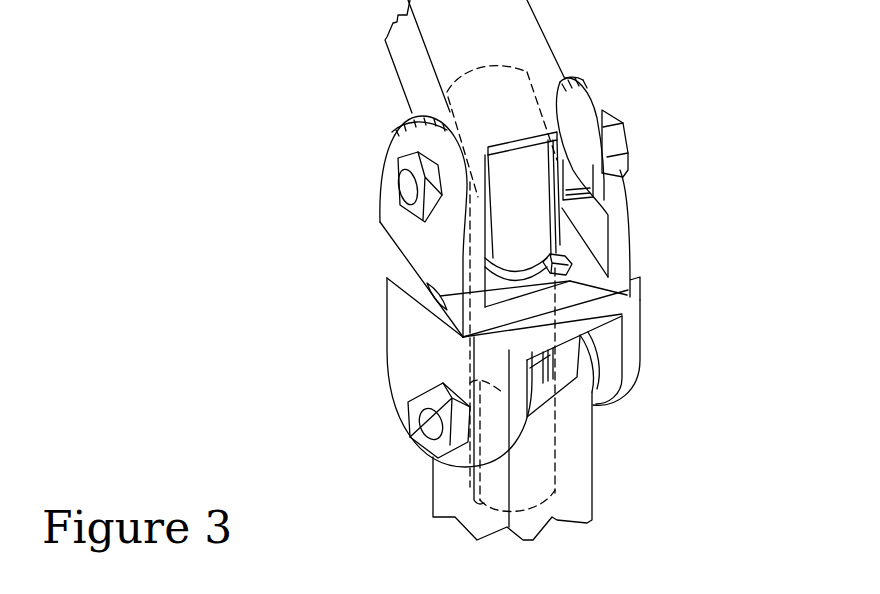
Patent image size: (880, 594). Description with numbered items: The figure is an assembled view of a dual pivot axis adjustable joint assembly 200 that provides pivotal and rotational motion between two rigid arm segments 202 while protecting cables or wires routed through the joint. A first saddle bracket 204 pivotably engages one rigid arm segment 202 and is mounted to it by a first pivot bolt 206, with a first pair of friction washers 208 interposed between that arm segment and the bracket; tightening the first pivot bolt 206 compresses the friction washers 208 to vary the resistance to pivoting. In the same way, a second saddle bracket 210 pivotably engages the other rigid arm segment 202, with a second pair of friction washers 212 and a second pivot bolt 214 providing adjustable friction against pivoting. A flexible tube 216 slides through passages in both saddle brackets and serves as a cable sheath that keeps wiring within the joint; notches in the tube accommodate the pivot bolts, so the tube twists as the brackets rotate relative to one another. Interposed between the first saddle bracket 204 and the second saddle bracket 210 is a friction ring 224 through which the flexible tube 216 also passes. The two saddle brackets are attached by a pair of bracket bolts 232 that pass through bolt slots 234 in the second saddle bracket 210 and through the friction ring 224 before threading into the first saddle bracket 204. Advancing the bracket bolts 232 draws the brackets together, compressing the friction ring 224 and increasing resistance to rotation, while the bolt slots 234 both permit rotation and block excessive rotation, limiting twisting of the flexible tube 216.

The adjustable joint assembly 200 is at (236, 286).
The rigid arm segment 202 is at (412, 78).
The first saddle bracket 204 is at (389, 365).
The first pivot bolt 206 is at (435, 428).
The first pair of friction washers 208 is at (598, 367).
The second saddle bracket 210 is at (627, 200).
The second pair of friction washers 212 is at (580, 127).
The second pivot bolt 214 is at (623, 130).
The flexible tube 216 is at (492, 244).
The friction ring 224 is at (552, 322).
The bracket bolt 232 is at (568, 268).
The bolt slot 234 is at (432, 303).